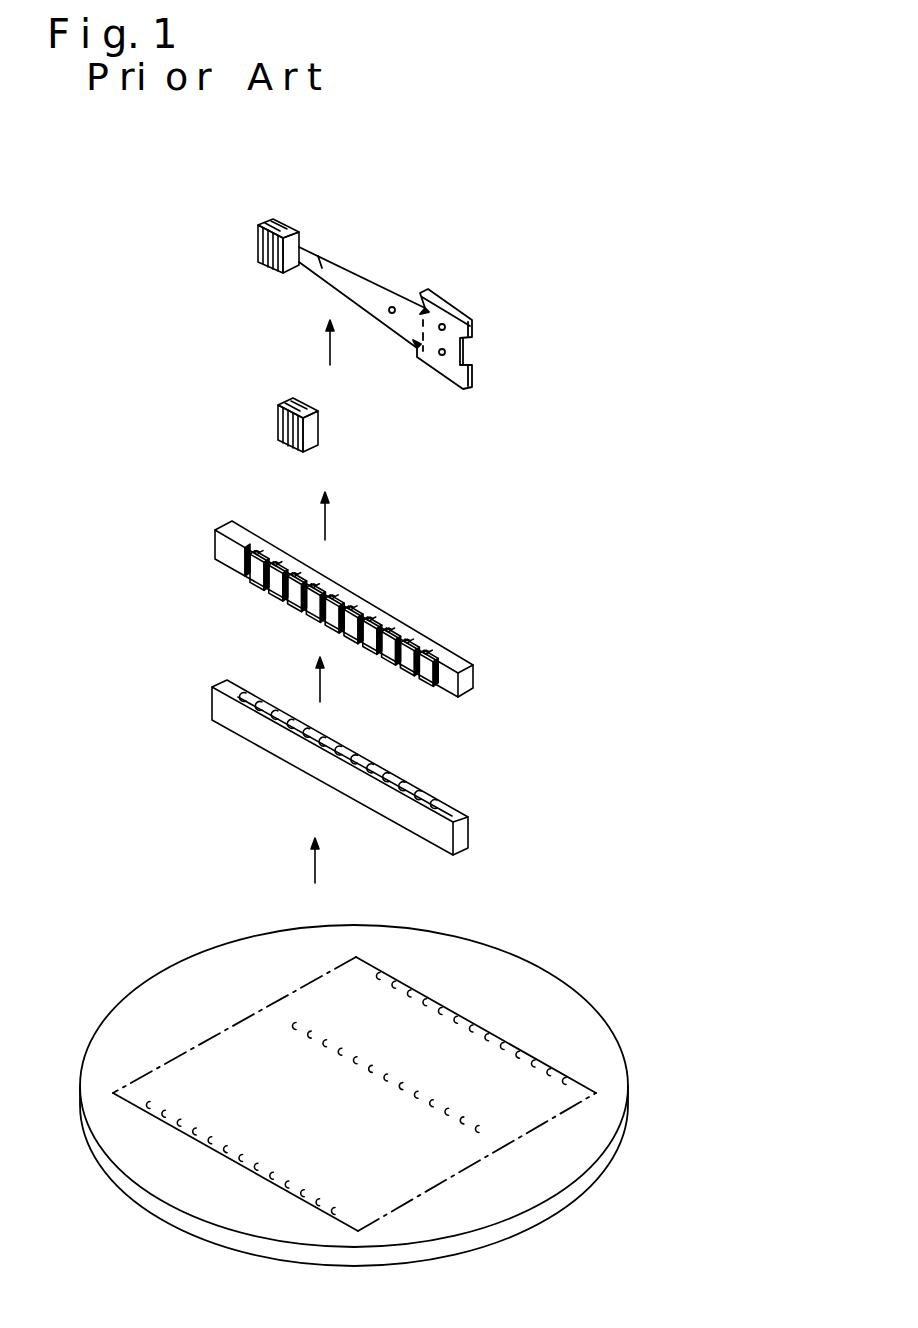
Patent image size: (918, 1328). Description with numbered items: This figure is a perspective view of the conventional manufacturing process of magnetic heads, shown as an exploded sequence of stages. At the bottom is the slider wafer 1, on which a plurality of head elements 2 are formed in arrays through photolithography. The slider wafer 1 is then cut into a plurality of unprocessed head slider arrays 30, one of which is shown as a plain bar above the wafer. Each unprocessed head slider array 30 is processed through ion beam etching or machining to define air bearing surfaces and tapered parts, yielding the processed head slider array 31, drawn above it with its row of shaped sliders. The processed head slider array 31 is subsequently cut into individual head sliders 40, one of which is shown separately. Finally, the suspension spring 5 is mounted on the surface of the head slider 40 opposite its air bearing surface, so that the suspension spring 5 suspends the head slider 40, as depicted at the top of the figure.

The slider wafer 1 is at (611, 1031).
The head elements 2 is at (478, 1128).
The suspension spring 5 is at (455, 310).
The unprocessed head slider array 30 is at (467, 833).
The processed head slider array 31 is at (473, 673).
The head slider 40 is at (247, 223).